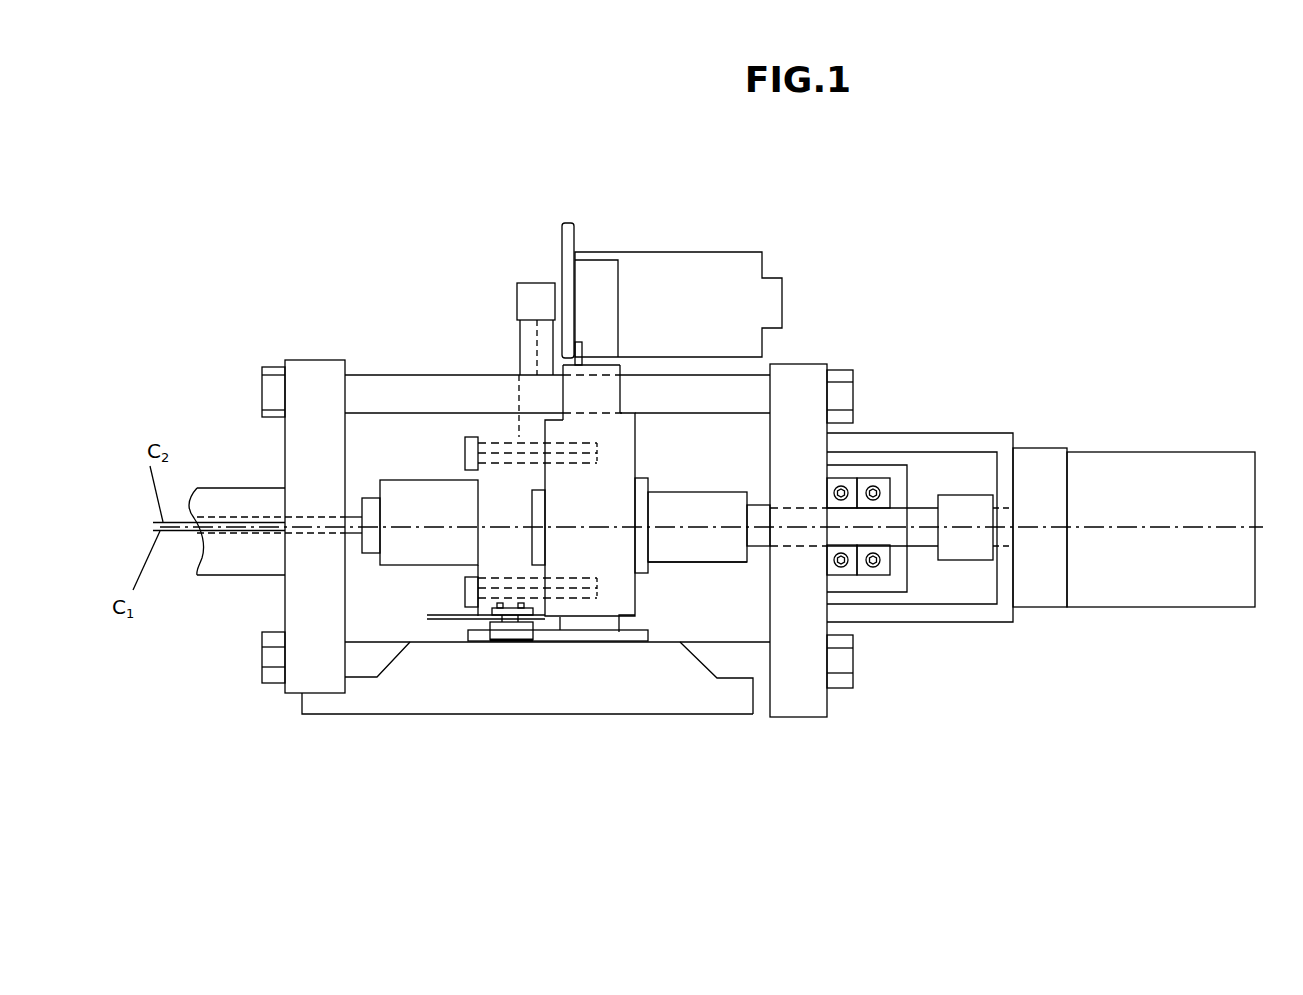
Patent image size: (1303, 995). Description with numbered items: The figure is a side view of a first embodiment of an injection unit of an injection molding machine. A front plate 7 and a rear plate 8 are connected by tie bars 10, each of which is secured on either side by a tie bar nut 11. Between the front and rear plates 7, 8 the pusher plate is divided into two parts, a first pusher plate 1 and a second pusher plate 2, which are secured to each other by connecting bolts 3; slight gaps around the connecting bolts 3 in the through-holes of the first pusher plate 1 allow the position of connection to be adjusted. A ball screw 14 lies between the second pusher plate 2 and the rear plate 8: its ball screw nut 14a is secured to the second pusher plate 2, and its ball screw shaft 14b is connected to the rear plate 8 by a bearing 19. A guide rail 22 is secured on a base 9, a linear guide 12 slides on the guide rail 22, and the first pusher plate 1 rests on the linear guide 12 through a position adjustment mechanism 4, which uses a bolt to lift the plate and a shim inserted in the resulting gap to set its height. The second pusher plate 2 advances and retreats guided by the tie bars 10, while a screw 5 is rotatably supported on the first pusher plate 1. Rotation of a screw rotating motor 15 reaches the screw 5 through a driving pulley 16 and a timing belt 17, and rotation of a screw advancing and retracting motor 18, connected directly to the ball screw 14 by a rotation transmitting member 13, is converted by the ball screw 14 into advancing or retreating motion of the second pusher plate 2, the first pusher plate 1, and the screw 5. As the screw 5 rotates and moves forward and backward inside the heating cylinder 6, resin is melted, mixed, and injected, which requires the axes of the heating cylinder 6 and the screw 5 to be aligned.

The first pusher plate 1 is at (425, 480).
The second pusher plate 2 is at (638, 471).
The connecting bolts 3 is at (472, 437).
The position adjustment mechanism 4 is at (470, 616).
The screw 5 is at (222, 520).
The heating cylinder 6 is at (240, 577).
The front plate 7 is at (325, 360).
The rear plate 8 is at (805, 362).
The base 9 is at (420, 714).
The tie bars 10 is at (425, 374).
The tie bar nut 11 is at (265, 368).
The linear guide 12 is at (503, 641).
The rotation transmitting member 13 is at (963, 494).
The ball screw 14 is at (662, 565).
The ball screw nut 14a is at (707, 565).
The ball screw shaft 14b is at (912, 547).
The screw rotating motor 15 is at (700, 252).
The driving pulley 16 is at (548, 283).
The timing belt 17 is at (520, 343).
The screw advancing and retracting motor 18 is at (1098, 452).
The bearing 19 is at (876, 492).
The guide rail 22 is at (607, 641).